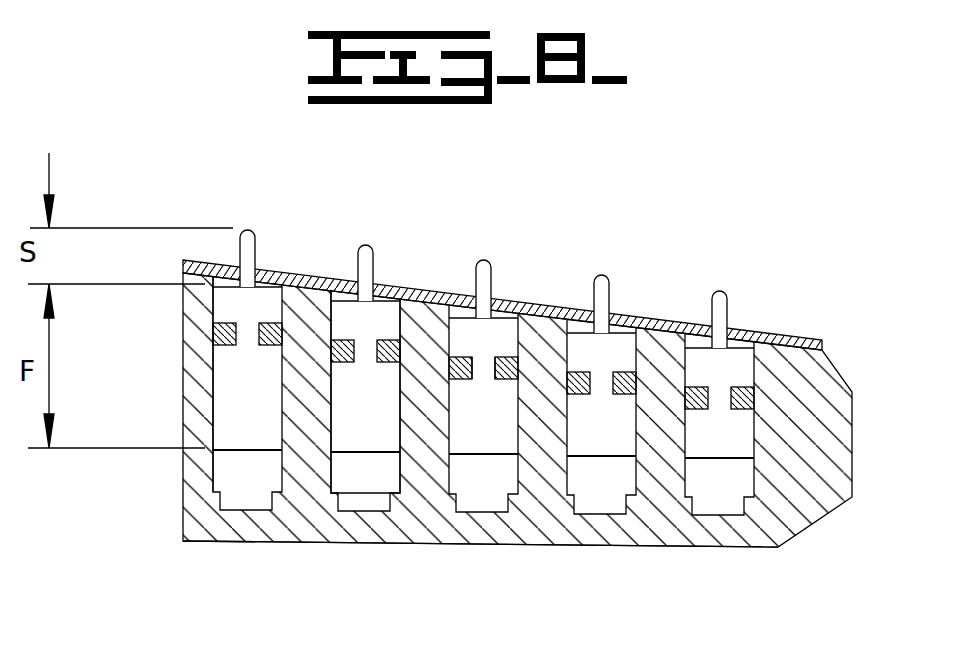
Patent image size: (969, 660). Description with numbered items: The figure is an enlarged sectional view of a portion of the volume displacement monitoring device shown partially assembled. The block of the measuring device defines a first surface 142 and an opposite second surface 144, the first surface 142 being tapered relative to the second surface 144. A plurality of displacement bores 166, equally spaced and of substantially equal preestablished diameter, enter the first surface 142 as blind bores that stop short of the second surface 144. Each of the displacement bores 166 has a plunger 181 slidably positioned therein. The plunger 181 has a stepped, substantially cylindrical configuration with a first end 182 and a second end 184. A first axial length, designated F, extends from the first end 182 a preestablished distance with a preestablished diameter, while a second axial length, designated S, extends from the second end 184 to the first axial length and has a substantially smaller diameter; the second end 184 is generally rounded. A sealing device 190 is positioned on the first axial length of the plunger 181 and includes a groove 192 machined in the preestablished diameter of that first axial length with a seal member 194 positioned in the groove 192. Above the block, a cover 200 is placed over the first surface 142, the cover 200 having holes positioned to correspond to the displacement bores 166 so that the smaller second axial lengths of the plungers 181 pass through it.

The first surface 142 is at (665, 332).
The second surface 144 is at (591, 547).
The displacement bores 166 is at (276, 478).
The plunger 181 is at (212, 409).
The first end 182 is at (238, 452).
The second end 184 is at (247, 229).
The sealing device 190 is at (402, 352).
The groove 192 is at (482, 362).
The seal member 194 is at (518, 363).
The cover 200 is at (787, 336).